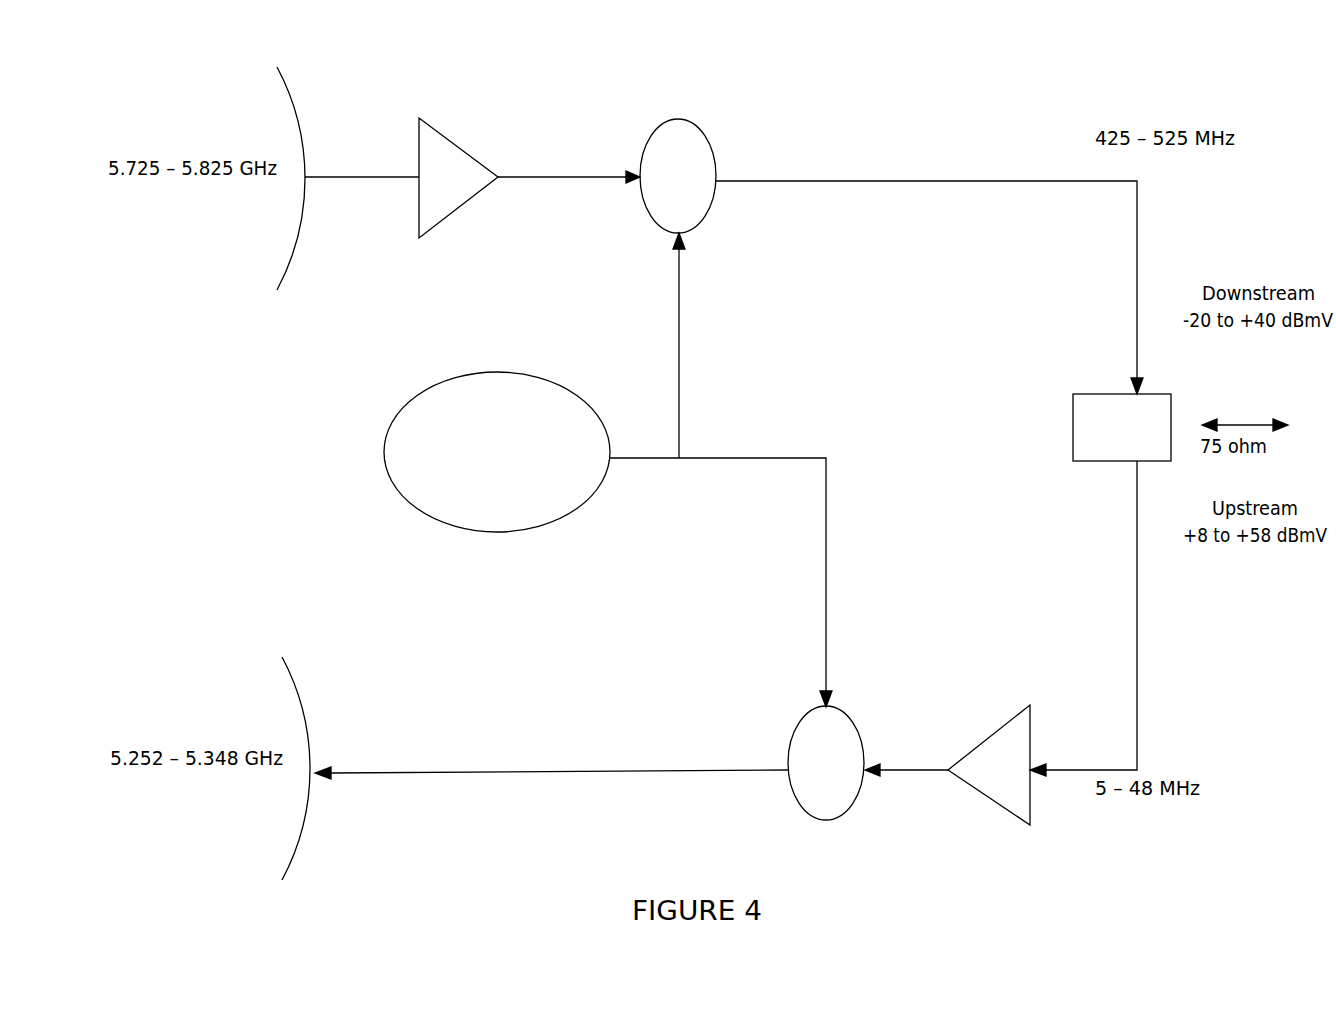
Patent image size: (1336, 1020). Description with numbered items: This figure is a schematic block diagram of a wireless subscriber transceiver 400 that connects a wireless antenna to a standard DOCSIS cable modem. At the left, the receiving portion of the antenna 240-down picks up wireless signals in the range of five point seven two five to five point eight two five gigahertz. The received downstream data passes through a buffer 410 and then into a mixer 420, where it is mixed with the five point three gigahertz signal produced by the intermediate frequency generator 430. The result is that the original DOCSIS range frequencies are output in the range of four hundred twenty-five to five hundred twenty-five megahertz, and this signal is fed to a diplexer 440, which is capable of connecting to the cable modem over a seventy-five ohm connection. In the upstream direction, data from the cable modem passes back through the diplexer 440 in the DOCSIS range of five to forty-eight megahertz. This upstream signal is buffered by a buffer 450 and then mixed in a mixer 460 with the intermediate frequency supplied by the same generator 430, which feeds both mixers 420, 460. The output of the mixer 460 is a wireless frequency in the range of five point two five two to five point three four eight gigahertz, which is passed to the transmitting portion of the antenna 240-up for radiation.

The transceiver system 400 is at (887, 105).
The downstream portion of the antenna 240-down is at (307, 137).
The transmitting portion of the antenna 240-up is at (310, 722).
The buffer 410 is at (477, 200).
The mixer 420 is at (690, 120).
The 5.300 GHz intermediate frequency generator 430 is at (582, 527).
The diplexer 440 is at (1100, 462).
The buffer 450 is at (1012, 820).
The mixer 460 is at (802, 720).